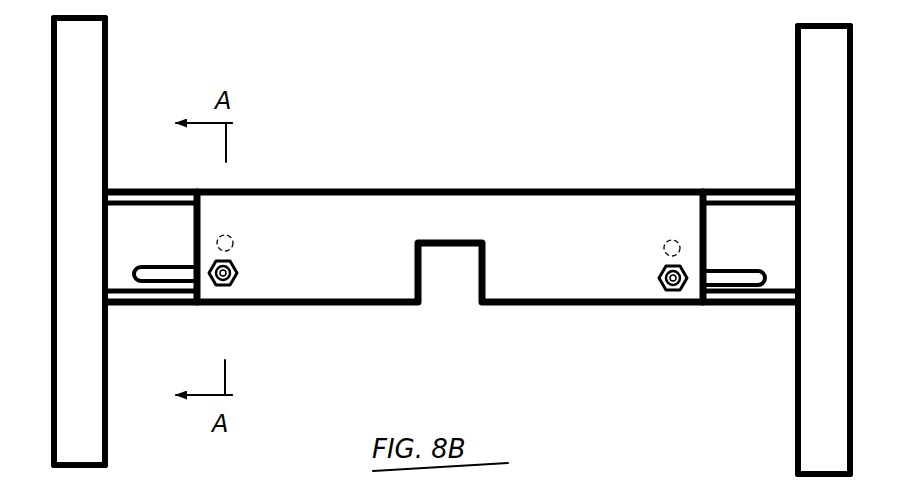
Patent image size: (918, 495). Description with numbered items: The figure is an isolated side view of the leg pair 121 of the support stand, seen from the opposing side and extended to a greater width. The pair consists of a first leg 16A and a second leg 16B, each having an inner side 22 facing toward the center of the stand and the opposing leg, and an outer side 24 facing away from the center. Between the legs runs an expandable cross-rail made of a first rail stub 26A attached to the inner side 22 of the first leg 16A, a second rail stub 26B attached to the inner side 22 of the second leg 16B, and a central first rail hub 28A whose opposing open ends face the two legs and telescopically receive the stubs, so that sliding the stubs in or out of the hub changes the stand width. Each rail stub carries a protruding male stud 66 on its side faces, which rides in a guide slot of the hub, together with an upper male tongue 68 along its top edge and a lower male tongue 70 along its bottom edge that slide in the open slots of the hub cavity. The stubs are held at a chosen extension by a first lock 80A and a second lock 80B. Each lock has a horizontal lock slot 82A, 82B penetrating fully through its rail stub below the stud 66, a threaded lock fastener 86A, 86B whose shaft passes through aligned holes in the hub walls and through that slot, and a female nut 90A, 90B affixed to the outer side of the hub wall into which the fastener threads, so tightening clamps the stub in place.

The assembly 121 is at (624, 72).
The first leg 16A is at (87, 122).
The second leg 16B is at (828, 80).
The inner side 22 is at (108, 434).
The outer side 24 is at (51, 415).
The first rail stub 26A is at (132, 231).
The second rail stub 26B is at (733, 229).
The first rail hub 28A is at (354, 213).
The male stud 66 is at (228, 236).
The upper male tongue 68 is at (120, 295).
The lower male tongue 70 is at (153, 192).
The first lock 80A is at (244, 251).
The second lock 80B is at (656, 268).
The first lock slot 82A is at (172, 275).
The second lock slot 82B is at (730, 282).
The first lock fastener 86A is at (226, 289).
The second lock fastener 86B is at (668, 293).
The first female nut 90A is at (239, 266).
The second female nut 90B is at (660, 278).